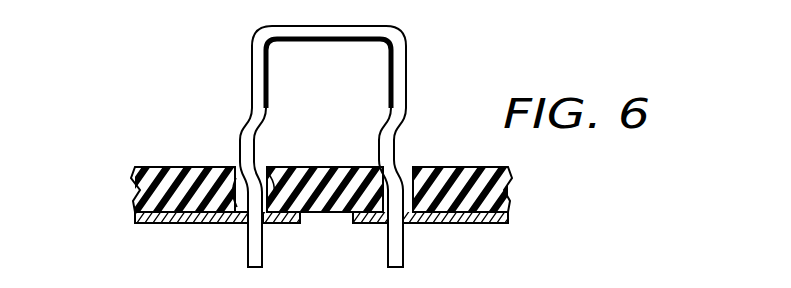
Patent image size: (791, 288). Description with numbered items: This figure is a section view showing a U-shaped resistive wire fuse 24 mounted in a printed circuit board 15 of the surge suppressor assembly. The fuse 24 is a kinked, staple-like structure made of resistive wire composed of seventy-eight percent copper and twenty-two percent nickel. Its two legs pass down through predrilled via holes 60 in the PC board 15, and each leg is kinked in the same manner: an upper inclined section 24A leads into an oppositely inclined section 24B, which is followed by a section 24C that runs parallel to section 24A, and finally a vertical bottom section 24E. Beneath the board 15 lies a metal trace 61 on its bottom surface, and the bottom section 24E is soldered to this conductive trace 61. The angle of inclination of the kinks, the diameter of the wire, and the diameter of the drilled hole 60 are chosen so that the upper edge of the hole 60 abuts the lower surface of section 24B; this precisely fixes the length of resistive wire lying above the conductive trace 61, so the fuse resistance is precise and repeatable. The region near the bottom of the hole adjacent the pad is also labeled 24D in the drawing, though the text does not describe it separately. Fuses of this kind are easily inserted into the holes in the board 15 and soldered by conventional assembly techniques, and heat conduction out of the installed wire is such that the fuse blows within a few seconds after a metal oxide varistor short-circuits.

The PC board 15 is at (164, 184).
The resistive wire fuse 24 is at (252, 58).
The upper inclined section 24A is at (272, 134).
The oppositely inclined section 24B is at (253, 162).
The section parallel to upper inclined section 24C is at (265, 200).
The conductive pad under board 24D is at (238, 220).
The vertical bottom section 24E is at (263, 254).
The predrilled via hole 60 is at (263, 200).
The metal trace 61 is at (177, 221).